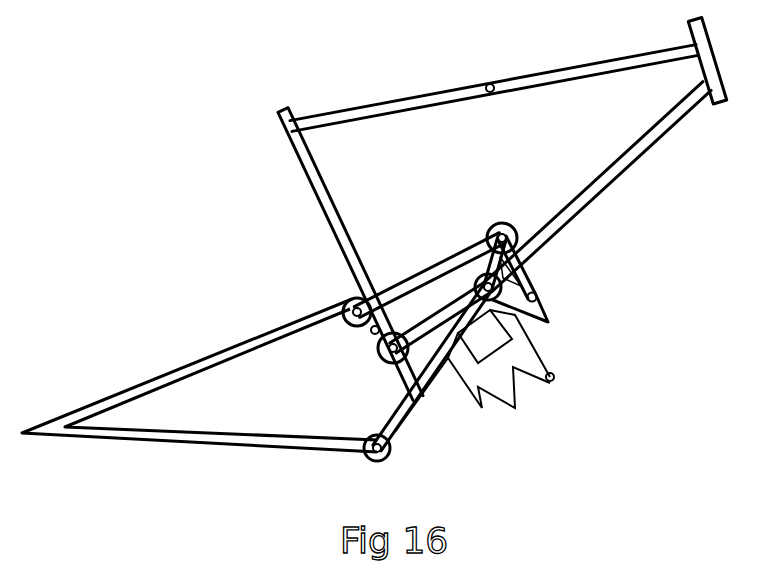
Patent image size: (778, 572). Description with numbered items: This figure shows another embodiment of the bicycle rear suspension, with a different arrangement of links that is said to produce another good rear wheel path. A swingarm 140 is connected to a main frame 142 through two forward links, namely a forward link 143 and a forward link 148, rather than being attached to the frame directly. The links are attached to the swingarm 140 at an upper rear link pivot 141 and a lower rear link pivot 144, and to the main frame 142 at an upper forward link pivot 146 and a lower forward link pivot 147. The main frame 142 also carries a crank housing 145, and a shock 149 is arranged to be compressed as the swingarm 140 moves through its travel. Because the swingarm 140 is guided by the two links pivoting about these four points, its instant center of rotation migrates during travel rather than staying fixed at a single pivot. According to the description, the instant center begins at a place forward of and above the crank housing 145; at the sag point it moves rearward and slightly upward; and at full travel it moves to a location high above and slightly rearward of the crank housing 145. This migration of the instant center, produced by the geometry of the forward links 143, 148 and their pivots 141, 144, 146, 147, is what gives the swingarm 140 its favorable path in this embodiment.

The swingarm 140 is at (207, 360).
The upper rear link pivot 141 is at (347, 300).
The main frame 142 is at (487, 85).
The forward link 143 is at (374, 333).
The lower rear link pivot 144 is at (383, 350).
The crank housing 145 is at (387, 458).
The upper forward link pivot 146 is at (517, 237).
The lower forward link pivot 147 is at (503, 287).
The forward link 148 is at (540, 298).
The shock 149 is at (556, 378).